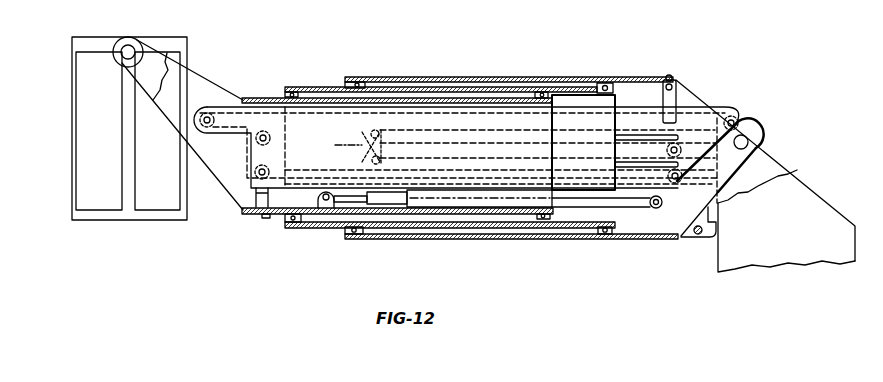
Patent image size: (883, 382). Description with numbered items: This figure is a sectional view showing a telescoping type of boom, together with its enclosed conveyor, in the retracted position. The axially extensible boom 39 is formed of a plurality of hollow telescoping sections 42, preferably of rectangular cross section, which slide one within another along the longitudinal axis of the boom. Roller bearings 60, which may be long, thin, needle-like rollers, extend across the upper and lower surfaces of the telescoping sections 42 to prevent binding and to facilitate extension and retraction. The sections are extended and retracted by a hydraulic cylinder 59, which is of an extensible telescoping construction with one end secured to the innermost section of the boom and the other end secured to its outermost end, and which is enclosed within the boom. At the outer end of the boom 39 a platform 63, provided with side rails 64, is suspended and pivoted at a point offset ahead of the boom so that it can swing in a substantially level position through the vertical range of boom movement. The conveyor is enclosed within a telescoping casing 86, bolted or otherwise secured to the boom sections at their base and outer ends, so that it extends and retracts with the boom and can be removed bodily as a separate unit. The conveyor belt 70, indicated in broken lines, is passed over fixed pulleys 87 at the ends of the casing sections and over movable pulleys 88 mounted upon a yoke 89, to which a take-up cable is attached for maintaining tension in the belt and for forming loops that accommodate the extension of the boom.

The axially extensible boom 39 is at (556, 72).
The telescoping sections 42 is at (367, 237).
The hydraulic cylinder 59 is at (577, 207).
The roller bearings 60 is at (355, 83).
The platform 63 is at (90, 218).
The side rails 64 is at (72, 71).
The conveyor belt 70 is at (310, 117).
The telescoping casing 86 is at (702, 122).
The fixed pulleys 87 is at (257, 170).
The movable pulleys 88 is at (370, 133).
The yoke 89 is at (366, 155).